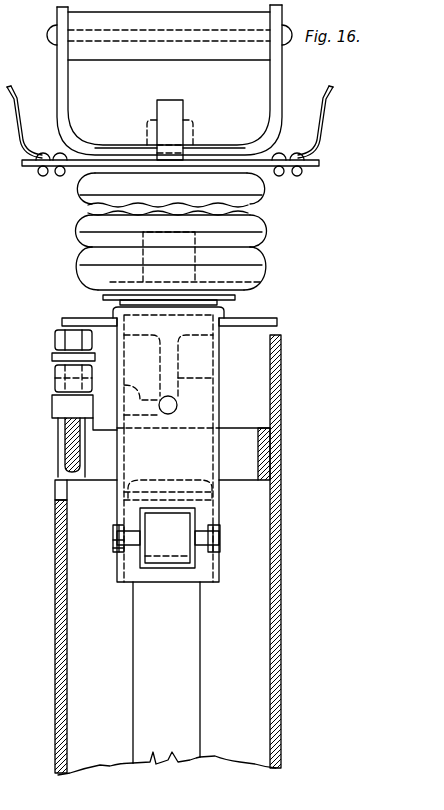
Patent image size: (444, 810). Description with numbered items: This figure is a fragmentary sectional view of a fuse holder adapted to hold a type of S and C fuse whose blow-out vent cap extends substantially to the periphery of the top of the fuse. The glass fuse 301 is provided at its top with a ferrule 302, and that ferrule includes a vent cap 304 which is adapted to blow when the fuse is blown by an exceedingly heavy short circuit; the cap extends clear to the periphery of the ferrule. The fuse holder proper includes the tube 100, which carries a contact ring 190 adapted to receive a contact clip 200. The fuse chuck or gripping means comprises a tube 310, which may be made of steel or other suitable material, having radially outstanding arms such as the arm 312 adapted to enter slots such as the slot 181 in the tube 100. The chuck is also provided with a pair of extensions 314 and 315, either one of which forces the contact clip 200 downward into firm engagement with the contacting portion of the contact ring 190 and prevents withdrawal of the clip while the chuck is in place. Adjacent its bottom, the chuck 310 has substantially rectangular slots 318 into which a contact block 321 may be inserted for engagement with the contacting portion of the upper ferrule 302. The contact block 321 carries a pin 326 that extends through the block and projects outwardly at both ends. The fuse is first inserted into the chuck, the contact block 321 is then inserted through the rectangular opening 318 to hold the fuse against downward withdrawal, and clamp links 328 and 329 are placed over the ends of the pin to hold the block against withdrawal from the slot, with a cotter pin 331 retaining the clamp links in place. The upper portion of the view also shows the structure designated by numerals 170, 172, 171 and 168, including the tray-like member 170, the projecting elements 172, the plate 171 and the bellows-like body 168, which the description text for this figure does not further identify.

The tray 170 is at (80, 22).
The retaining ears / projection 172 is at (12, 92).
The base plate 171 is at (31, 165).
The bellows 168 is at (258, 228).
The extension 314 is at (87, 317).
The extension 315 is at (253, 317).
The tube 310 is at (214, 359).
The slot 181 is at (218, 378).
The radially outstanding arm 312 is at (172, 406).
The contact clip 200 is at (55, 416).
The tube 100 is at (268, 418).
The contact ring 190 is at (266, 456).
The vent cap 304 is at (172, 479).
The ferrule 302 is at (128, 516).
The contact block 321 is at (162, 552).
The rectangular slot 318 is at (193, 523).
The clamp link 328 is at (218, 536).
The clamp link 329 is at (118, 530).
The cotter pin 331 is at (118, 547).
The pin 326 is at (133, 543).
The glass fuse 301 is at (197, 637).